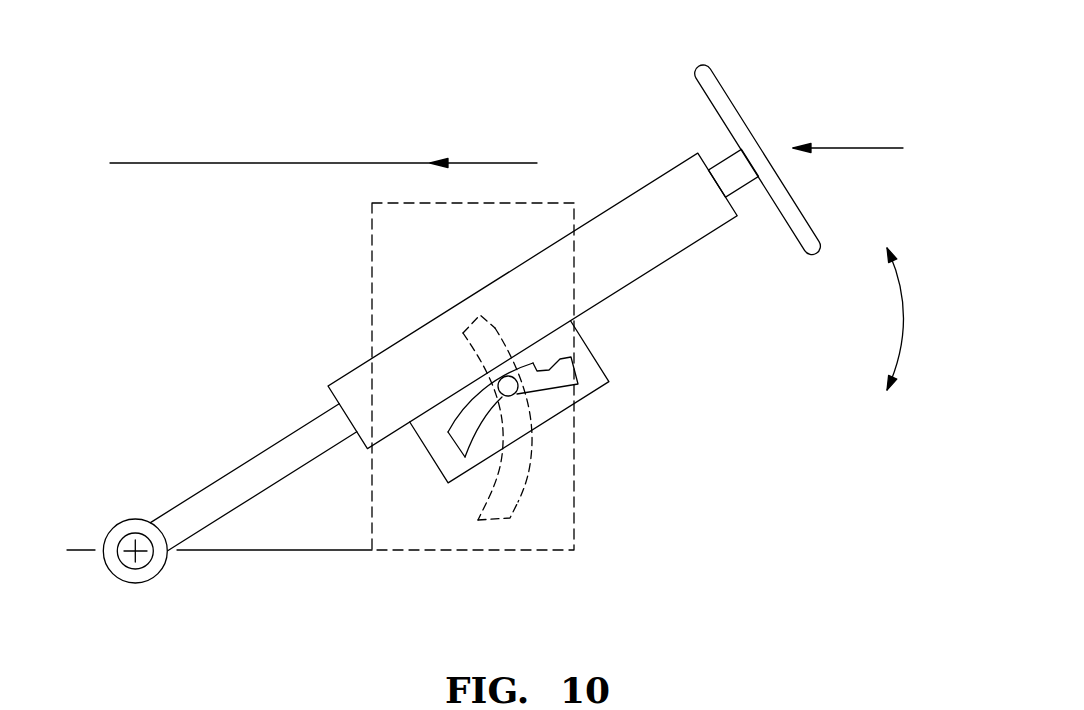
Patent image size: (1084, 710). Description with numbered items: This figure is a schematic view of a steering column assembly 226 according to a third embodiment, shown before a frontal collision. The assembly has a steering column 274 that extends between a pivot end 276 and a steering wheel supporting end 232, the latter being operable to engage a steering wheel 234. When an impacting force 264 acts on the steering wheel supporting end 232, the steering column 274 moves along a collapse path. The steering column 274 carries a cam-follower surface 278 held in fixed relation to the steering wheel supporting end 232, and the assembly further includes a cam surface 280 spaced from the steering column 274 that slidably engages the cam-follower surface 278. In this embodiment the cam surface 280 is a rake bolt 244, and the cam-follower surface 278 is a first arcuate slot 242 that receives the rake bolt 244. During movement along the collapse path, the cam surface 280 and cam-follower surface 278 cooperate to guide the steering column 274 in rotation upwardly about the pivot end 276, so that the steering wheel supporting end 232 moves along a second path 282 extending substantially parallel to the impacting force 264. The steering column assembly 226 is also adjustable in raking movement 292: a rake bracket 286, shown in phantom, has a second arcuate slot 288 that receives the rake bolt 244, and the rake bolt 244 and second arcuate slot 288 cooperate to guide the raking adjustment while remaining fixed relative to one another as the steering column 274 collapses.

The steering column assembly 226 is at (268, 120).
The steering wheel supporting end 232 is at (728, 167).
The steering wheel 234 is at (713, 85).
The first arcuate slot 242 is at (560, 360).
The rake bolt 244 is at (515, 390).
The impacting force 264 is at (855, 147).
The steering column 274 is at (143, 332).
The pivot end 276 is at (107, 593).
The cam-follower surface 278 is at (550, 390).
The cam surface 280 is at (462, 453).
The second path 282 is at (497, 163).
The rake bracket 286 is at (553, 528).
The second arcuate slot 288 is at (518, 503).
The raking movement 292 is at (905, 298).